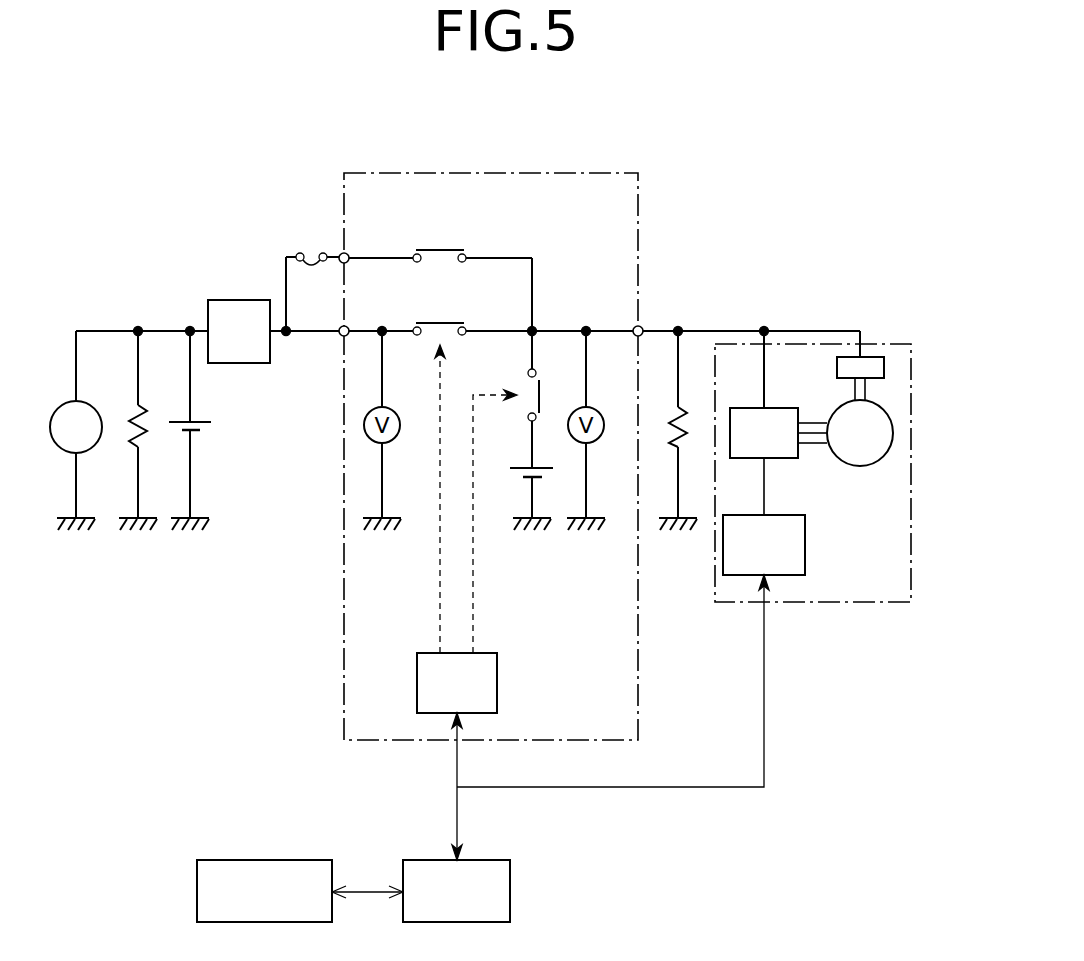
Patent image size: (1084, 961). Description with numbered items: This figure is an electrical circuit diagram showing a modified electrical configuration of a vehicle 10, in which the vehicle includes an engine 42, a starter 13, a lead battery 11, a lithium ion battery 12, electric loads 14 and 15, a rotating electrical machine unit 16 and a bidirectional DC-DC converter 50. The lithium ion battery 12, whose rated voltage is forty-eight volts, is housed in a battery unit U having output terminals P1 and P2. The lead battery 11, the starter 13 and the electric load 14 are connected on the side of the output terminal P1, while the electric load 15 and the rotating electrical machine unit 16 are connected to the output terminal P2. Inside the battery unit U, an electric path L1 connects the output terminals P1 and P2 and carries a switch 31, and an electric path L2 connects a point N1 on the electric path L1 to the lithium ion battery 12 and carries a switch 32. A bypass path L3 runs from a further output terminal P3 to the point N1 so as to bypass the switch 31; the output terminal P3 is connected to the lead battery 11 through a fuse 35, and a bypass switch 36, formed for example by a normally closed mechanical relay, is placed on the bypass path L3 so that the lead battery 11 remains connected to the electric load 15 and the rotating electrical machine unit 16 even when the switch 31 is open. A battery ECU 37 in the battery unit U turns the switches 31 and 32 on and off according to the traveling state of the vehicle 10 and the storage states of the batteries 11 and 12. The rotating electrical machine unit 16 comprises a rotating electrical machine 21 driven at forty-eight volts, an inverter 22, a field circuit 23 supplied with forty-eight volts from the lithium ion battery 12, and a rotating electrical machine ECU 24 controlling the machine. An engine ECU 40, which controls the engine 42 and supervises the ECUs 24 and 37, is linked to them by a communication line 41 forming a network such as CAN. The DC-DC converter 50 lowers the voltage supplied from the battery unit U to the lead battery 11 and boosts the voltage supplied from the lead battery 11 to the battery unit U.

The vehicle 10 is at (845, 163).
The battery unit U is at (622, 172).
The rotating electrical machine unit 16 is at (889, 604).
The lead battery 11 is at (197, 420).
The lithium ion battery 12 is at (550, 468).
The starter 13 is at (114, 402).
The electric load 14 is at (165, 402).
The electric load 15 is at (683, 404).
The rotating electrical machine 21 is at (890, 409).
The inverter 22 is at (781, 407).
The field circuit 23 is at (875, 356).
The rotating electrical machine ECU 24 is at (806, 530).
The switch 31 is at (450, 323).
The switch 32 is at (541, 385).
The fuse 35 is at (298, 252).
The bypass switch 36 is at (450, 250).
The battery ECU 37 is at (499, 668).
The engine ECU 40 is at (492, 860).
The communication line 41 is at (705, 790).
The engine 42 is at (315, 860).
The bidirectional DC-DC converter 50 is at (226, 300).
The output terminal P1 is at (340, 326).
The output terminal P2 is at (642, 326).
The output terminal P3 is at (340, 252).
The point N1 is at (536, 327).
The electric path L1 is at (505, 330).
The electric path L2 is at (530, 438).
The bypass path L3 is at (505, 257).